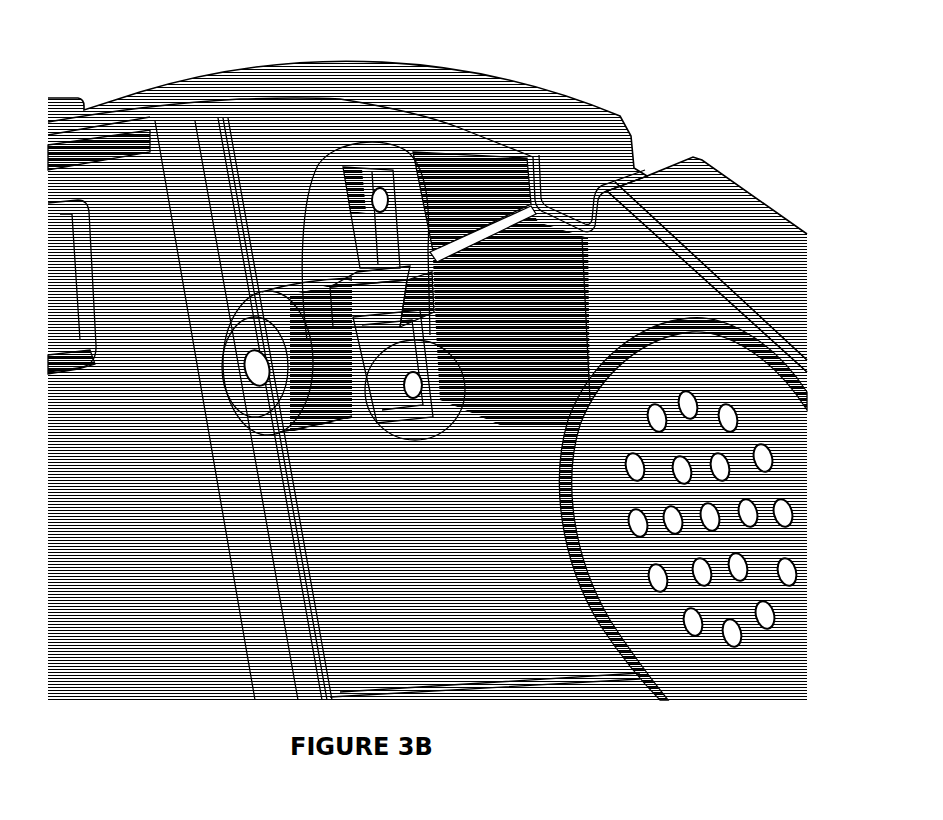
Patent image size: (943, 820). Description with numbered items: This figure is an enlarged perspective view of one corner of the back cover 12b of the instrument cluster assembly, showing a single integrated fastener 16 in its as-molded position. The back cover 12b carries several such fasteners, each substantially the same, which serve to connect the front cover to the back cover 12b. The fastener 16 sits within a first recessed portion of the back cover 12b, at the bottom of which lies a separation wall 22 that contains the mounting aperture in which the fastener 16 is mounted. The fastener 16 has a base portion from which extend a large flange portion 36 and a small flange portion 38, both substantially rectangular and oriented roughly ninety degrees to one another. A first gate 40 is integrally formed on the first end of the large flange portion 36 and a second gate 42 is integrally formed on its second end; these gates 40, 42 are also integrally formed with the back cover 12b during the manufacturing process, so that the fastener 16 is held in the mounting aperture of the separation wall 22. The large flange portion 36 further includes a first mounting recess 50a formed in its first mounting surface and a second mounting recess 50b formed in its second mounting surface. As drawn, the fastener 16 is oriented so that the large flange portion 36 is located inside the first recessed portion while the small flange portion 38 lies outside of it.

The back cover 12b is at (727, 181).
The fastener 16 is at (340, 150).
The separation wall 22 is at (322, 202).
The large flange portion 36 is at (488, 352).
The small flange portion 38 is at (357, 330).
The first gate 40 is at (383, 168).
The second gate 42 is at (416, 398).
The first mounting recess 50a is at (455, 180).
The second mounting recess 50b is at (443, 700).